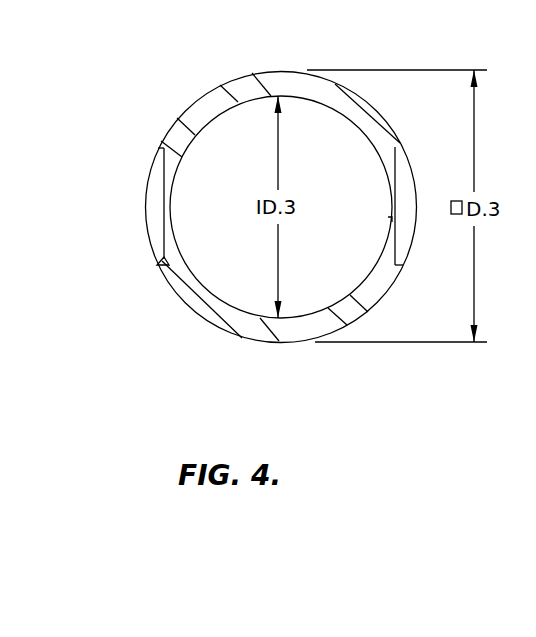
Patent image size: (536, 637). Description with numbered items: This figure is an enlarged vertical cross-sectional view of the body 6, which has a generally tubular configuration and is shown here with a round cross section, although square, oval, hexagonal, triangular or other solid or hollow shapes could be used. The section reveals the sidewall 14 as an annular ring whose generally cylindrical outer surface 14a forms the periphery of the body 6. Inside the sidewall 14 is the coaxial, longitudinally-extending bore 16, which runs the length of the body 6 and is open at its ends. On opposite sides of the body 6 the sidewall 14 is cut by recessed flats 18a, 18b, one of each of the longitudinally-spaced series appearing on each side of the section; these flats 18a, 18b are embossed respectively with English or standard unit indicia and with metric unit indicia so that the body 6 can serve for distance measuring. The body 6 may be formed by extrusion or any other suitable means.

The sidewall 14 is at (255, 74).
The outer surface 14a is at (380, 314).
The bore 16 is at (281, 207).
The recessed flat 18a is at (156, 264).
The recessed flat 18b is at (396, 173).
The body 6 is at (252, 343).